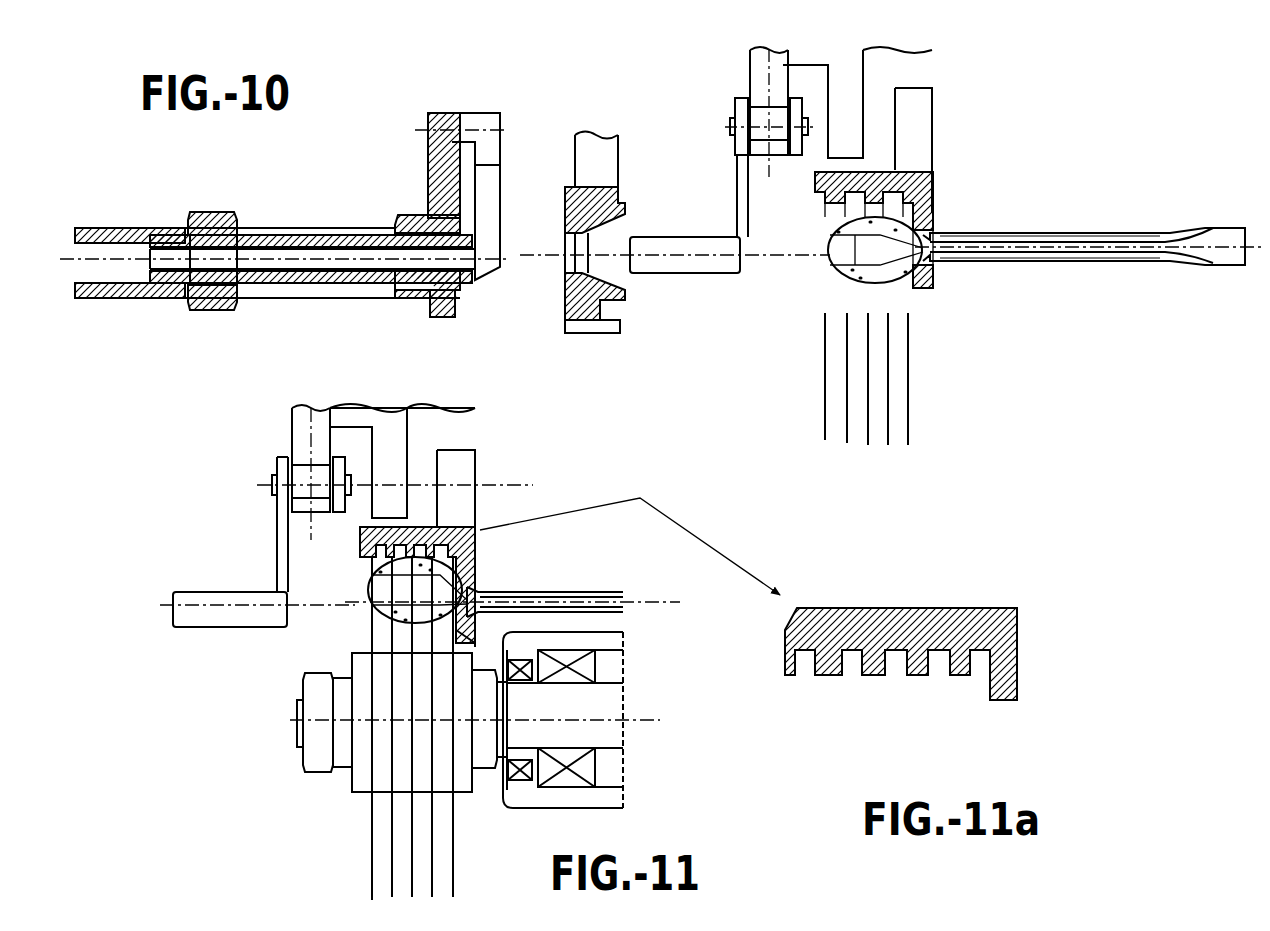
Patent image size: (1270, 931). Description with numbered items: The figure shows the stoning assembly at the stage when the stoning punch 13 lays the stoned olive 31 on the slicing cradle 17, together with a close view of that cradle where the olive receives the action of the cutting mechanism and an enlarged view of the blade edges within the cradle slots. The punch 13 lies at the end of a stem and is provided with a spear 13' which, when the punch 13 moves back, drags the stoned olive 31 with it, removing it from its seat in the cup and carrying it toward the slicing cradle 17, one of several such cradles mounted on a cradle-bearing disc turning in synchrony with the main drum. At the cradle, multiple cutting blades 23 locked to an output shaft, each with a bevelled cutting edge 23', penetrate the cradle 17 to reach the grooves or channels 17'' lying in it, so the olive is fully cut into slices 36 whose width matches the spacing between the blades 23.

In FIG. 10, the punch 13 is at (1090, 190).
In FIG. 10, the spear 13' is at (1050, 186).
In FIG. 10, the slicing cradle 17 is at (918, 219).
In FIG. 11, the slicing cradle 17 is at (417, 585).
In FIG. 11A, the slicing cradle 17 is at (901, 614).
In FIG. 10, the grooves or channels 17'' is at (938, 135).
In FIG. 11, the grooves or channels 17'' is at (483, 515).
In FIG. 11A, the grooves or channels 17'' is at (892, 709).
In FIG. 10, the cutting blade 23 is at (935, 389).
In FIG. 11, the cutting blade 23 is at (325, 728).
In FIG. 10, the bevelled cutting edge 23' is at (947, 380).
In FIG. 11, the bevelled cutting edge 23' is at (316, 847).
In FIG. 10, the stoned olive 31 is at (837, 273).
In FIG. 11, the slices 36 is at (470, 557).